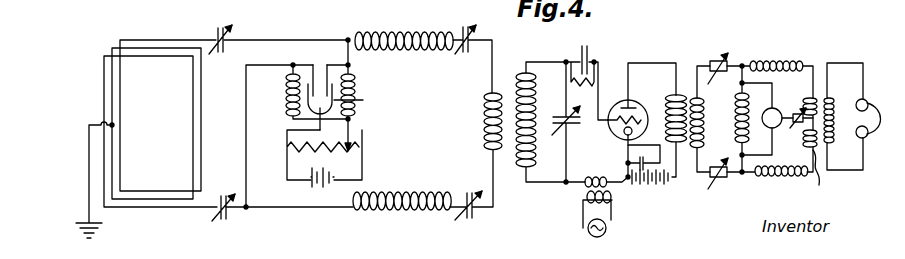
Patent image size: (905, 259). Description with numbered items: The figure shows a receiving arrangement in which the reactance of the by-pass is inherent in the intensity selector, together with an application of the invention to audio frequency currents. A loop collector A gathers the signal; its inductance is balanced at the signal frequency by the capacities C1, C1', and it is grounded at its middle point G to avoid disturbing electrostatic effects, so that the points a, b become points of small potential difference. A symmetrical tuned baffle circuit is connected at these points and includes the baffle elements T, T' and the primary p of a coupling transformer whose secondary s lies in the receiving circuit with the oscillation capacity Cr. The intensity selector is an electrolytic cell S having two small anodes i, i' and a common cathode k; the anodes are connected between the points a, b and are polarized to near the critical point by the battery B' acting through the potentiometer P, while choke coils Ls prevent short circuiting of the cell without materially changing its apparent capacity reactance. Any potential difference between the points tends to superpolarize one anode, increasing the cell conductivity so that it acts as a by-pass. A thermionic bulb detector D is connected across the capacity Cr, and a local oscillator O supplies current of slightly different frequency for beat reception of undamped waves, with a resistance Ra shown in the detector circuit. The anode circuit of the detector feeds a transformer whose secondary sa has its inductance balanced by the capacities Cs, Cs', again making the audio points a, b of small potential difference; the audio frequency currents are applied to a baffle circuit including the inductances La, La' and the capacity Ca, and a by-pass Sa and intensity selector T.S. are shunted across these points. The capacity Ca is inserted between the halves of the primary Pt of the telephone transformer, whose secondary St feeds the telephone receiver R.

The loop collector A is at (228, 123).
The middle point ground G is at (94, 180).
The capacity C1 is at (220, 27).
The capacity C1' is at (219, 224).
The point a is at (347, 25).
The point b is at (248, 224).
The baffle element T is at (423, 48).
The baffle element T' is at (423, 197).
The primary of coupling transformer p is at (482, 121).
The choke coils Ls is at (312, 123).
The electrolytic cell S is at (362, 106).
The anode i is at (311, 71).
The anode i' is at (328, 70).
The cathode k is at (322, 108).
The potentiometer P is at (324, 149).
The battery B' is at (322, 187).
The secondary of coupling transformer s is at (572, 116).
The oscillation capacity Cr is at (573, 122).
The detector D is at (647, 123).
The resistance / condenser branch Ra is at (645, 150).
The local oscillator O is at (608, 216).
The secondary of audio transformer sa is at (706, 119).
The capacity Cs is at (725, 57).
The capacity Cs' is at (720, 187).
The by-pass Sa is at (732, 119).
The intensity selector T.S. is at (762, 119).
The capacity of baffle circuit Ca is at (795, 132).
The inductance La is at (779, 82).
The inductance La' is at (779, 168).
The primary of telephone transformer Pt is at (822, 181).
The secondary of telephone transformer St is at (843, 116).
The telephone receiver R is at (868, 105).